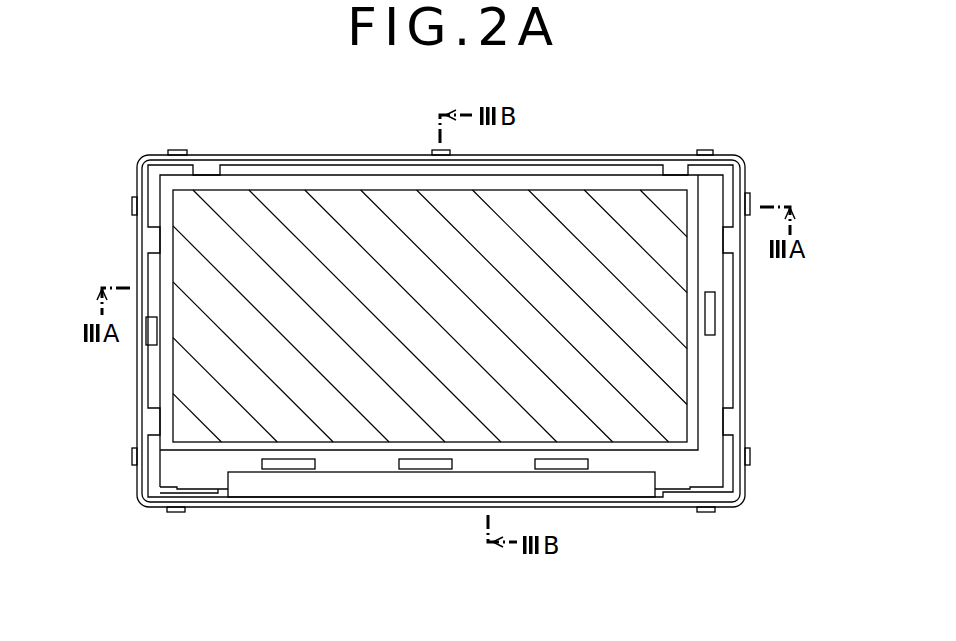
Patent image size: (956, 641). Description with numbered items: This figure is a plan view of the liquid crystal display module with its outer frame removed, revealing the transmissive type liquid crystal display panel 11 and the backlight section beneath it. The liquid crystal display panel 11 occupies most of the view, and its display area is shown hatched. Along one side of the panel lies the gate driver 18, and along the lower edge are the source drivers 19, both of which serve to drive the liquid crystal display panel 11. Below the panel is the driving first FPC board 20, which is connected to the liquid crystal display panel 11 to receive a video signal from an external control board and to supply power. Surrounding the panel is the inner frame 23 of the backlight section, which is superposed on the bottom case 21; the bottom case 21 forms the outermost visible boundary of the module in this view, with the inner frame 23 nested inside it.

The liquid crystal display panel 11 is at (710, 371).
The gate driver 18 is at (708, 313).
The source driver 19 is at (426, 463).
The first FPC board 20 is at (358, 488).
The bottom case 21 is at (742, 480).
The inner frame 23 is at (732, 423).